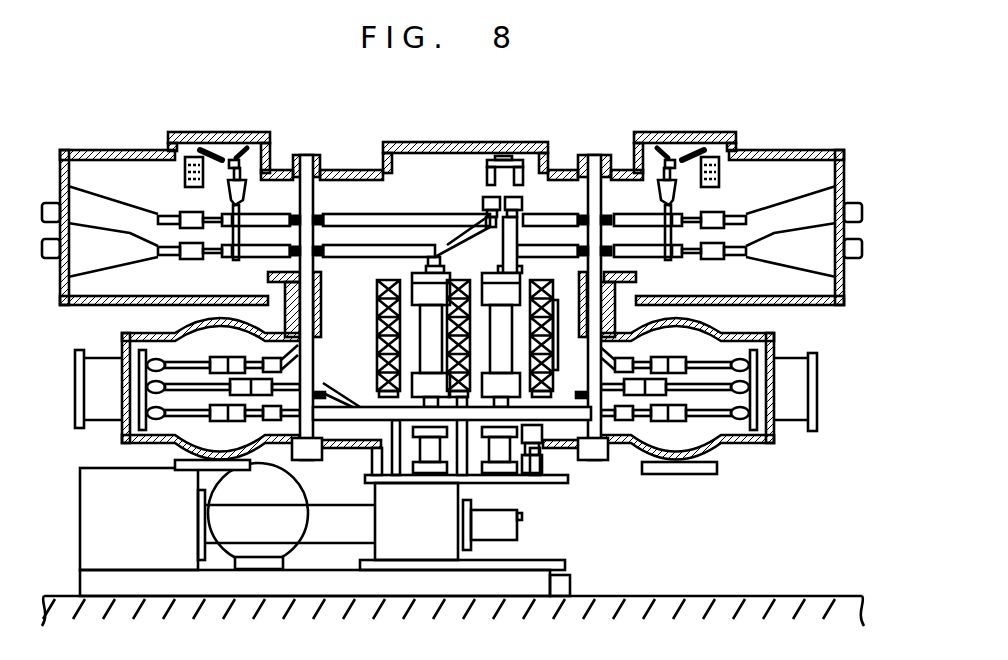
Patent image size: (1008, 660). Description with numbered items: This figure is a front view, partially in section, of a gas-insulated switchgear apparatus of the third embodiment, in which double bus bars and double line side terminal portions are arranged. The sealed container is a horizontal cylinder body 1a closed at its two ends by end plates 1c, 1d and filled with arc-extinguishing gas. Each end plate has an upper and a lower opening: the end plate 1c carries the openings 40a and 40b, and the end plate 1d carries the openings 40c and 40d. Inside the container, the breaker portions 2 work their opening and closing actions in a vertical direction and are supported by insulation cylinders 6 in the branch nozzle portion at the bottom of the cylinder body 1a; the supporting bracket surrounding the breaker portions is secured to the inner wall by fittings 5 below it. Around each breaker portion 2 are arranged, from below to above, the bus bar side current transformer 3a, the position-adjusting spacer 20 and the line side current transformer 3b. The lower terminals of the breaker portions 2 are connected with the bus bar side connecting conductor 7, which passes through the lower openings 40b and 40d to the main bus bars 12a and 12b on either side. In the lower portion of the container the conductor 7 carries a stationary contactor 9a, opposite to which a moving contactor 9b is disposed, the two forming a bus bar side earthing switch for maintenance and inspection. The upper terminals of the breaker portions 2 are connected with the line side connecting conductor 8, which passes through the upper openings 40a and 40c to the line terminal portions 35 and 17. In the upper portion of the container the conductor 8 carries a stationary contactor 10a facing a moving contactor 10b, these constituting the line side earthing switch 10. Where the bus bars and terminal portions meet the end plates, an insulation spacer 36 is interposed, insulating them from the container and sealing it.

The cylinder body 1a is at (373, 172).
The end plate 1c is at (314, 190).
The end plate 1d is at (592, 200).
The breaker portion 2 is at (510, 293).
The bus bar side current transformer 3a is at (547, 376).
The line side current transformer 3b is at (553, 308).
The fittings 5 is at (460, 460).
The insulation cylinder 6 is at (523, 433).
The bus bar side connecting conductor 7 is at (343, 444).
The line side connecting conductor 8 is at (417, 213).
The stationary contactor 9a is at (558, 445).
The moving contactor 9b is at (517, 427).
The line side earthing switch 10 is at (478, 199).
The stationary contactor 10a is at (525, 205).
The moving contactor 10b is at (525, 160).
The main bus bar 12a is at (82, 360).
The main bus bar 12b is at (790, 357).
The line side terminal portion 17 is at (803, 152).
The spacer 20 is at (563, 327).
The line terminal portion 35 is at (98, 150).
The insulation spacer 36 is at (300, 155).
The opening 40a is at (314, 185).
The opening 40b is at (314, 368).
The opening 40c is at (603, 205).
The opening 40d is at (662, 470).